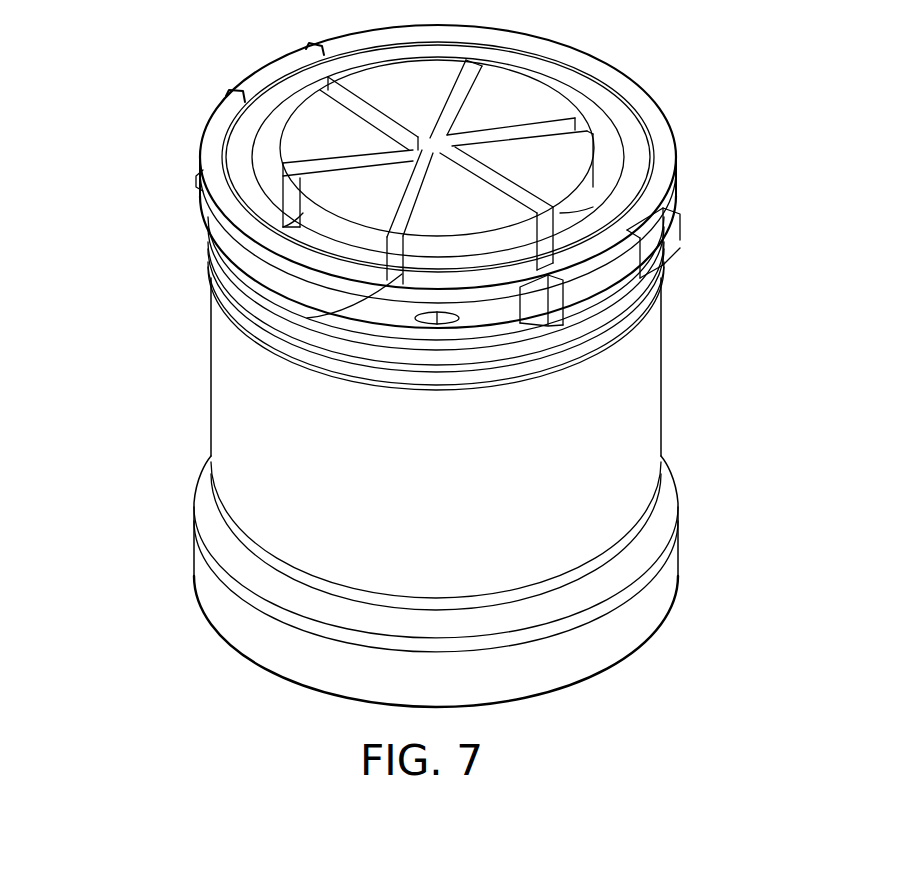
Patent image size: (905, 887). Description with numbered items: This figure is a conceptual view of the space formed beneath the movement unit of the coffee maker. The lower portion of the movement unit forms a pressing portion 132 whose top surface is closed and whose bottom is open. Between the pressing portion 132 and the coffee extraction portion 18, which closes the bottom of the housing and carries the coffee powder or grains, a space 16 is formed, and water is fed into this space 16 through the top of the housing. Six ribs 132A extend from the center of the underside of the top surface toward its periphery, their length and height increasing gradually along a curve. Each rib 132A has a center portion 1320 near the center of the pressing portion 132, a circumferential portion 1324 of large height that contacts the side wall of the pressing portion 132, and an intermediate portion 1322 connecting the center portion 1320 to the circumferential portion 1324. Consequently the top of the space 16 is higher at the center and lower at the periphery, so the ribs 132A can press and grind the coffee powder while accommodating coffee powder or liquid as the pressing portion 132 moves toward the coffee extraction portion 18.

The pressing portion 132 is at (590, 212).
The center portion 1320 is at (313, 91).
The intermediate portion 1322 is at (280, 182).
The ribs 132A is at (290, 247).
The circumferential portion 1324 is at (307, 318).
The space 16 is at (600, 407).
The coffee extraction portion 18 is at (670, 563).